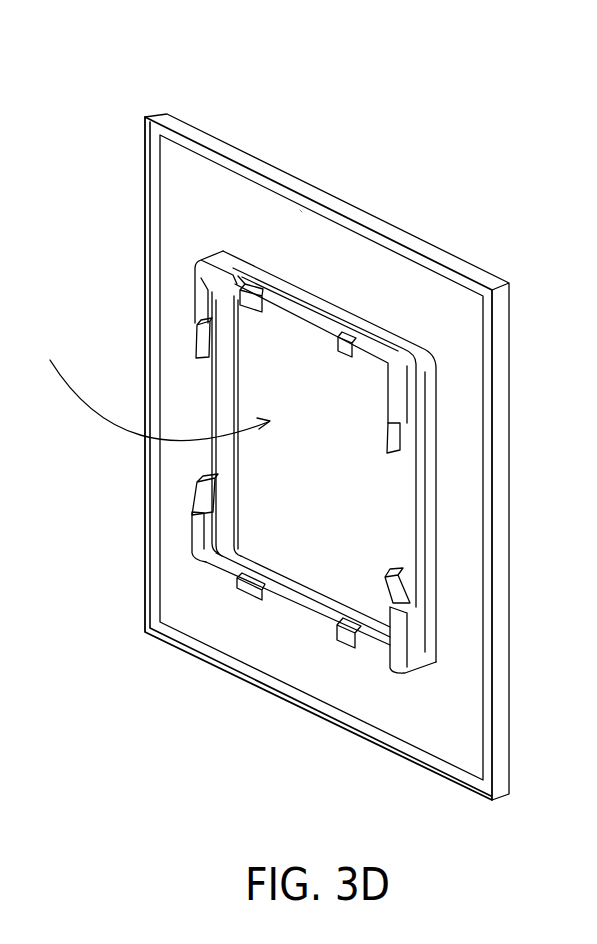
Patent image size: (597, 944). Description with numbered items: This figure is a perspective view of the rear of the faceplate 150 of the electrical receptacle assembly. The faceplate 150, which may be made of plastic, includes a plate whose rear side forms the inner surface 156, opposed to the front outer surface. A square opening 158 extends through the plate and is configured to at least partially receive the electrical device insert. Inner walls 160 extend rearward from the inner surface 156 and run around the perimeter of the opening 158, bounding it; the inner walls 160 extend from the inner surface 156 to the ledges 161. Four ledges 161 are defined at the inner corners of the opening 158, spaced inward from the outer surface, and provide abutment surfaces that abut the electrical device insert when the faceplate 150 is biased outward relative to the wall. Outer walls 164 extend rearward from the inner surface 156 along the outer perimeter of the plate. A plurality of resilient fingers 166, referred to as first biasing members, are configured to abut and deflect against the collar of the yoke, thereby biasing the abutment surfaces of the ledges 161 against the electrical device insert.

The faceplate 150 is at (90, 117).
The inner surface 156 is at (318, 245).
The opening 158 is at (151, 390).
The inner walls 160 is at (303, 318).
The ledges 161 is at (213, 265).
The outer walls 164 is at (425, 240).
The resilient fingers 166 is at (258, 290).